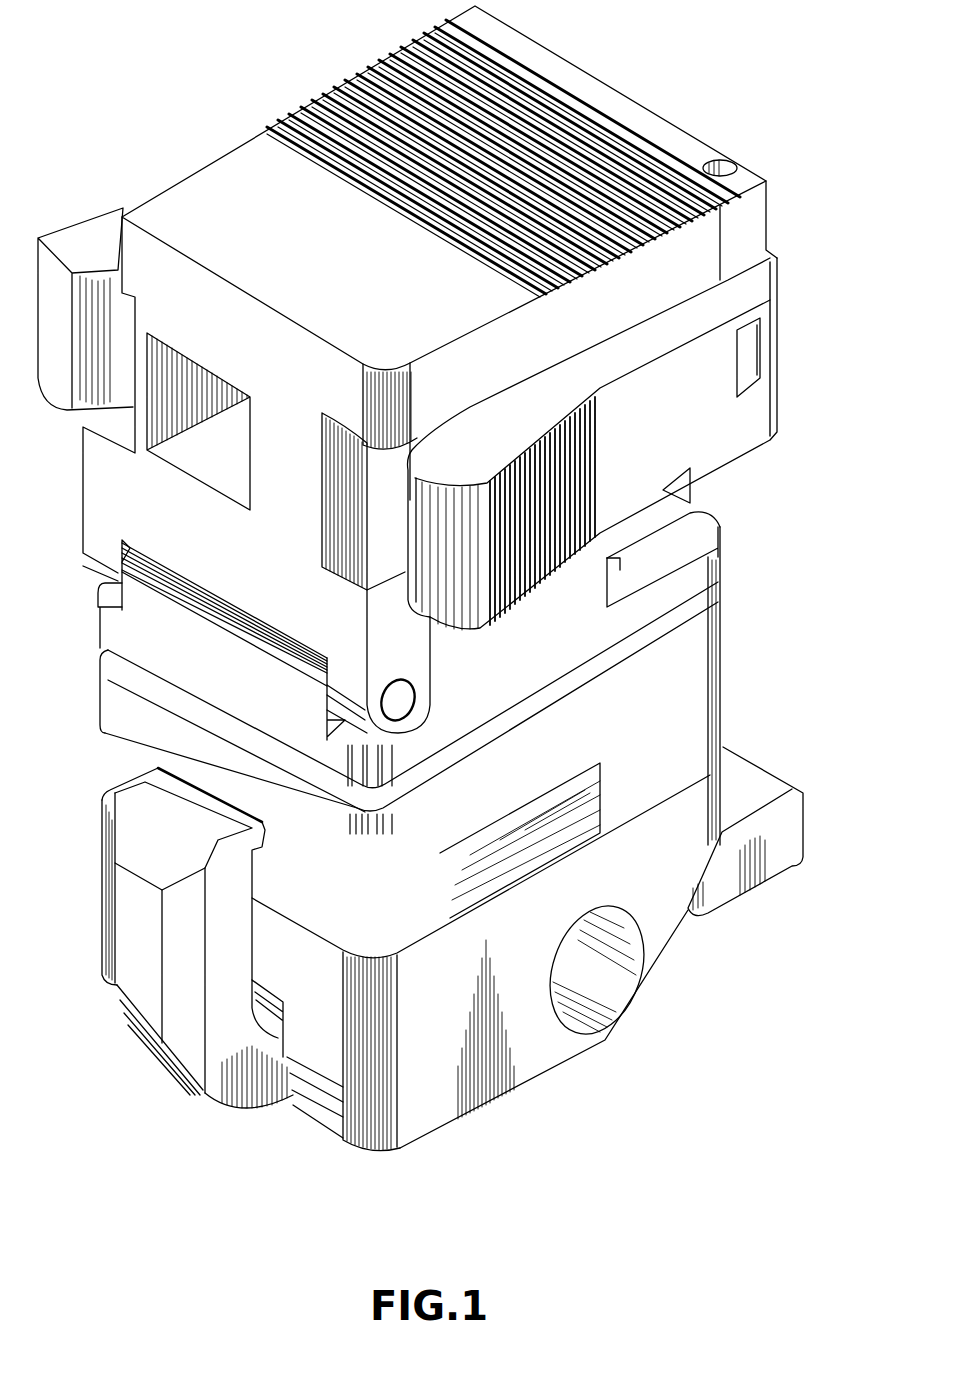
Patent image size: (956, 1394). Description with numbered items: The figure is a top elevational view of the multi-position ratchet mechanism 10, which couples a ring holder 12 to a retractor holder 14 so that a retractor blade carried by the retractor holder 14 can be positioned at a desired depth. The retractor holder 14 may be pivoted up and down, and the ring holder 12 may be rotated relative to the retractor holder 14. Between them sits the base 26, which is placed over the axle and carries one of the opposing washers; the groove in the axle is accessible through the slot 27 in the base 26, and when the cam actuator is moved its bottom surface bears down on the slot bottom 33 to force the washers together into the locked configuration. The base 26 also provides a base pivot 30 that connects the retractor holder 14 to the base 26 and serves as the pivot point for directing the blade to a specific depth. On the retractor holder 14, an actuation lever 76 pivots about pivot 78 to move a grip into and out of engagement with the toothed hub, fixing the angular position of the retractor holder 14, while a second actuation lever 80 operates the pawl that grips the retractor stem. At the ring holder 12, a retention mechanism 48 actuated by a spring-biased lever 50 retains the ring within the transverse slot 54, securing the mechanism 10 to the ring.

The ratchet mechanism 10 is at (690, 92).
The ring holder 12 is at (530, 1102).
The retractor holder 14 is at (330, 264).
The base 26 is at (565, 651).
The slot 27 is at (690, 521).
The base pivot 30 is at (412, 710).
The slot bottom 33 is at (683, 564).
The retention mechanism 48 is at (175, 852).
The lever 50 is at (763, 798).
The transverse slot 54 is at (392, 931).
The actuation lever 76 is at (668, 434).
The pivot 78 is at (737, 165).
The actuation lever 80 is at (80, 235).